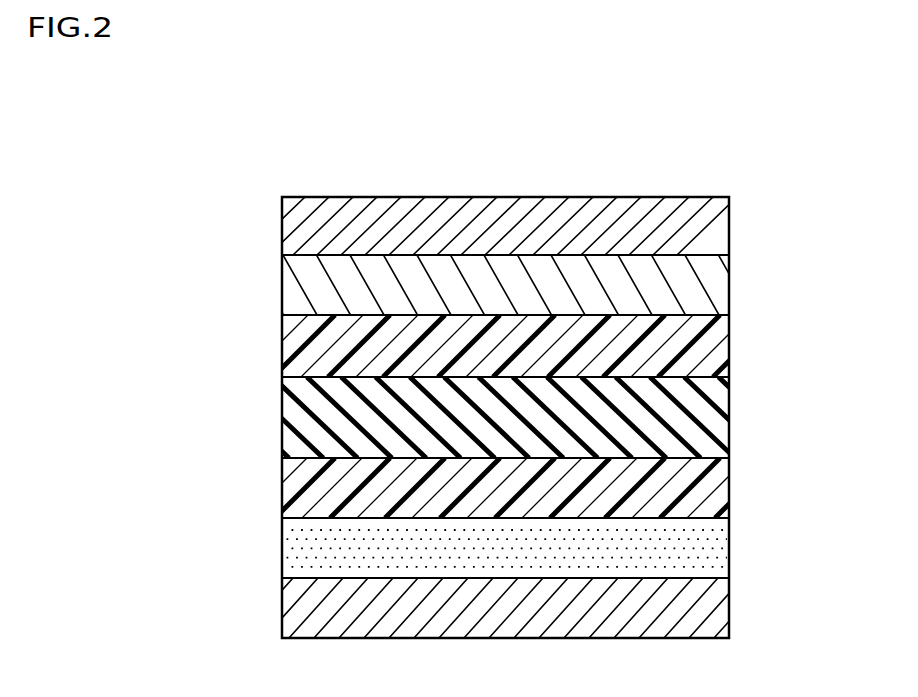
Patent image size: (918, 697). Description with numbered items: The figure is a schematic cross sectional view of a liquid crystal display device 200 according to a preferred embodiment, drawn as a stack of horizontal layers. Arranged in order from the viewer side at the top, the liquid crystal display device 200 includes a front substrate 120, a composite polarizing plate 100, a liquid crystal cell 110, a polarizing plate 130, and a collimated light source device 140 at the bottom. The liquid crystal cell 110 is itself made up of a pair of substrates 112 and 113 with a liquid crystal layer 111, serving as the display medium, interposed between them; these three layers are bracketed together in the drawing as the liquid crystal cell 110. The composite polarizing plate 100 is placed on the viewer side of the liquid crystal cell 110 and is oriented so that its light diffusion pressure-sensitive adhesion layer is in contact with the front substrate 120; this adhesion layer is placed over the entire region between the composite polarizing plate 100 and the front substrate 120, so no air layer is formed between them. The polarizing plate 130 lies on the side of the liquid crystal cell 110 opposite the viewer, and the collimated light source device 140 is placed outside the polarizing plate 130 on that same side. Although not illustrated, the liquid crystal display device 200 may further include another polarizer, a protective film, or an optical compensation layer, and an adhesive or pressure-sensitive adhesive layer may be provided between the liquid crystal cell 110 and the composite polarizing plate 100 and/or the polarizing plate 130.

The liquid crystal display device 200 is at (673, 175).
The front substrate 120 is at (729, 222).
The composite polarizing plate 100 is at (729, 298).
The liquid crystal cell 110 is at (820, 320).
The substrate 112 is at (729, 343).
The liquid crystal layer 111 is at (729, 417).
The substrate 113 is at (729, 485).
The polarizing plate 130 is at (729, 543).
The collimated light source device 140 is at (729, 603).